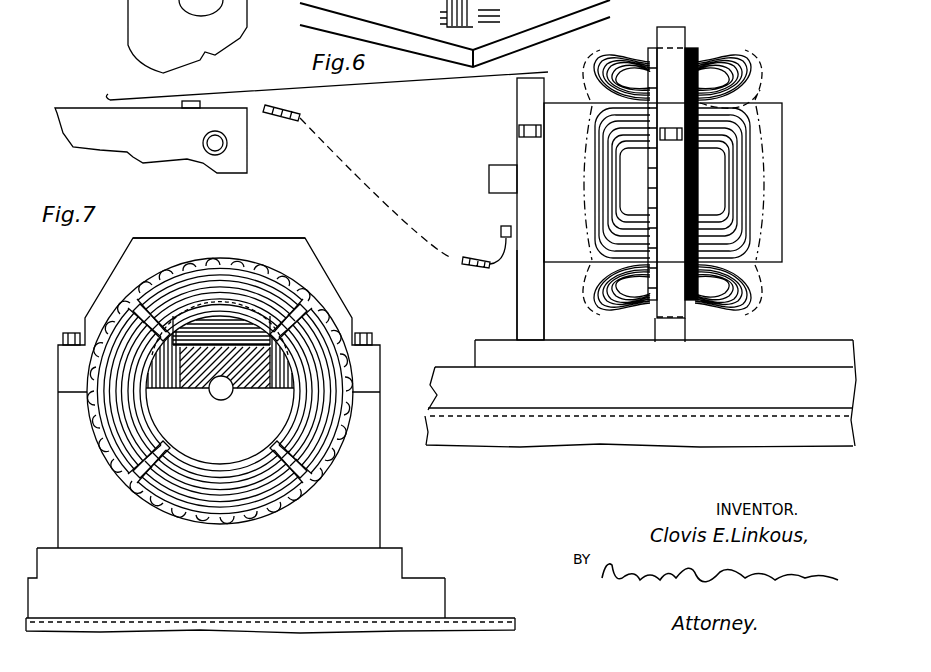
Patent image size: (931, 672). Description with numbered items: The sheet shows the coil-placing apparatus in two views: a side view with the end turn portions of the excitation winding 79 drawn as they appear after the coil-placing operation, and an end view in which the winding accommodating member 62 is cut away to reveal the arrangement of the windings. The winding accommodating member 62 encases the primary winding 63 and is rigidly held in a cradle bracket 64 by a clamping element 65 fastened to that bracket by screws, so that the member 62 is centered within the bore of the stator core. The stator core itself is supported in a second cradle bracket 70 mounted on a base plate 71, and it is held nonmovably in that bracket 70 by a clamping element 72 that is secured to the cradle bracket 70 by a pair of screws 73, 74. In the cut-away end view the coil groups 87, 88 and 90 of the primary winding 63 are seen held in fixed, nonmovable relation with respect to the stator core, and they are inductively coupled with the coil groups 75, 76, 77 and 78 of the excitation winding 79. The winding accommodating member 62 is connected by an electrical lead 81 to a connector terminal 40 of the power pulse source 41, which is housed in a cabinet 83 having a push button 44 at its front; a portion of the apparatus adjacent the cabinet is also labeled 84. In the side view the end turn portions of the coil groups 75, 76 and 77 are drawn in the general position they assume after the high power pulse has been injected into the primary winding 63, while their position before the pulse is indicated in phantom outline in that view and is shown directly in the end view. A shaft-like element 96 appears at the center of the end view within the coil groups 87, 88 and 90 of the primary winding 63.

In FIG. 6, the connector terminal 40 is at (188, 113).
In FIG. 6, the power pulse source 41 is at (91, 97).
In FIG. 6, the push button 44 is at (228, 143).
In FIG. 6, the winding accommodating member 62 is at (783, 99).
In FIG. 7, the primary winding 63 is at (260, 336).
In FIG. 6, the cradle bracket 64 is at (517, 290).
In FIG. 6, the clamping element 65 is at (517, 106).
In FIG. 7, the cradle bracket 70 is at (381, 470).
In FIG. 6, the base plate 71 is at (826, 343).
In FIG. 7, the base plate 71 is at (385, 556).
In FIG. 6, the clamping element 72 is at (682, 36).
In FIG. 7, the clamping element 72 is at (160, 237).
In FIG. 7, the screw 73 is at (72, 332).
In FIG. 7, the screw 74 is at (374, 331).
In FIG. 6, the coil group 75 is at (745, 62).
In FIG. 7, the coil group 75 is at (208, 292).
In FIG. 6, the coil group 76 is at (752, 180).
In FIG. 7, the coil group 76 is at (315, 380).
In FIG. 6, the coil group 77 is at (745, 305).
In FIG. 7, the coil group 77 is at (180, 474).
In FIG. 7, the coil group 78 is at (122, 375).
In FIG. 7, the excitation winding 79 is at (257, 268).
In FIG. 6, the electrical lead 81 is at (245, 110).
In FIG. 6, the cabinet 83 is at (225, 28).
In FIG. 6, the plate 84 is at (455, 33).
In FIG. 7, the coil group 87 is at (208, 334).
In FIG. 7, the coil group 88 is at (275, 378).
In FIG. 7, the coil group 90 is at (163, 376).
In FIG. 6, the shaft 96 is at (489, 180).
In FIG. 7, the shaft 96 is at (224, 400).